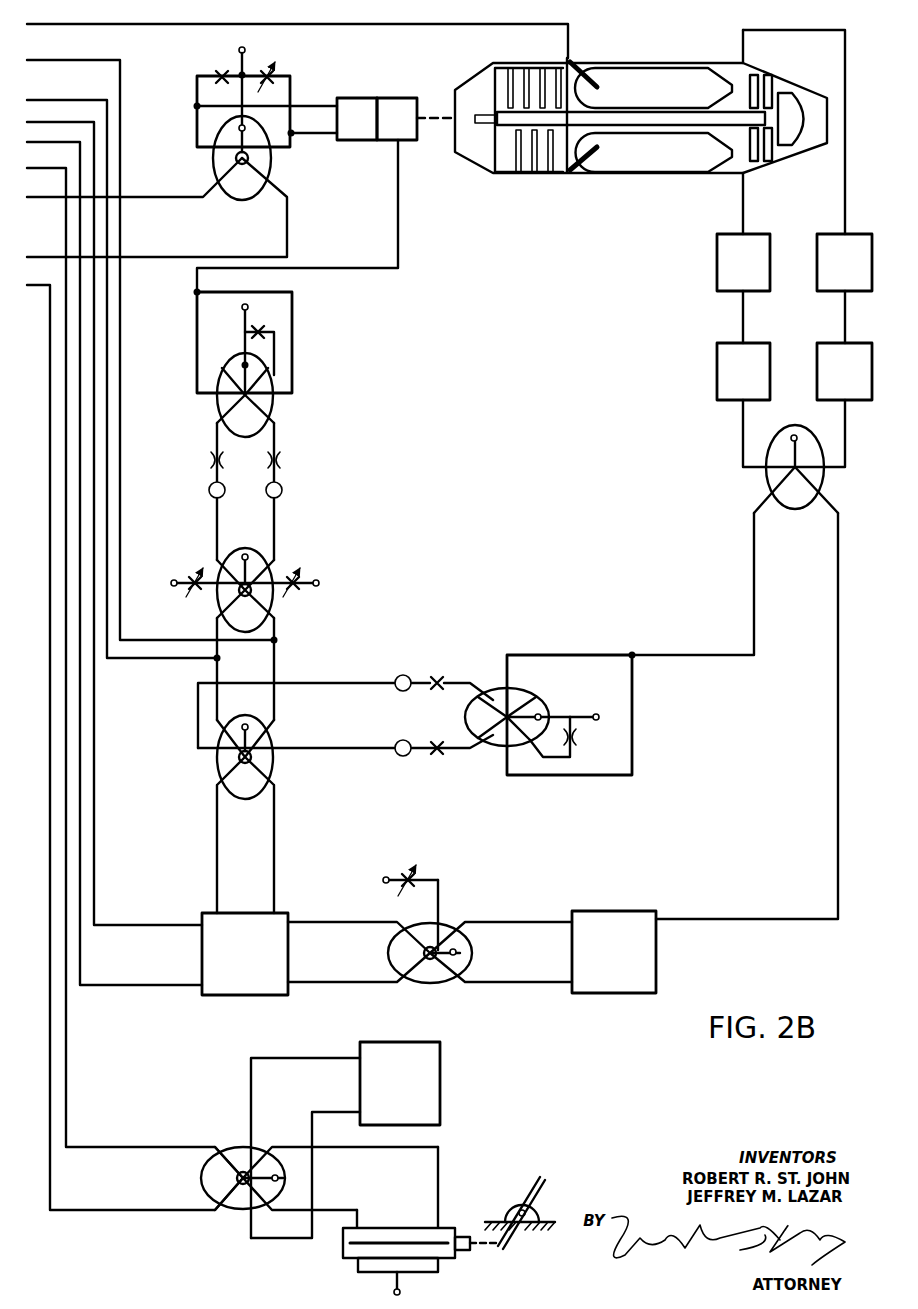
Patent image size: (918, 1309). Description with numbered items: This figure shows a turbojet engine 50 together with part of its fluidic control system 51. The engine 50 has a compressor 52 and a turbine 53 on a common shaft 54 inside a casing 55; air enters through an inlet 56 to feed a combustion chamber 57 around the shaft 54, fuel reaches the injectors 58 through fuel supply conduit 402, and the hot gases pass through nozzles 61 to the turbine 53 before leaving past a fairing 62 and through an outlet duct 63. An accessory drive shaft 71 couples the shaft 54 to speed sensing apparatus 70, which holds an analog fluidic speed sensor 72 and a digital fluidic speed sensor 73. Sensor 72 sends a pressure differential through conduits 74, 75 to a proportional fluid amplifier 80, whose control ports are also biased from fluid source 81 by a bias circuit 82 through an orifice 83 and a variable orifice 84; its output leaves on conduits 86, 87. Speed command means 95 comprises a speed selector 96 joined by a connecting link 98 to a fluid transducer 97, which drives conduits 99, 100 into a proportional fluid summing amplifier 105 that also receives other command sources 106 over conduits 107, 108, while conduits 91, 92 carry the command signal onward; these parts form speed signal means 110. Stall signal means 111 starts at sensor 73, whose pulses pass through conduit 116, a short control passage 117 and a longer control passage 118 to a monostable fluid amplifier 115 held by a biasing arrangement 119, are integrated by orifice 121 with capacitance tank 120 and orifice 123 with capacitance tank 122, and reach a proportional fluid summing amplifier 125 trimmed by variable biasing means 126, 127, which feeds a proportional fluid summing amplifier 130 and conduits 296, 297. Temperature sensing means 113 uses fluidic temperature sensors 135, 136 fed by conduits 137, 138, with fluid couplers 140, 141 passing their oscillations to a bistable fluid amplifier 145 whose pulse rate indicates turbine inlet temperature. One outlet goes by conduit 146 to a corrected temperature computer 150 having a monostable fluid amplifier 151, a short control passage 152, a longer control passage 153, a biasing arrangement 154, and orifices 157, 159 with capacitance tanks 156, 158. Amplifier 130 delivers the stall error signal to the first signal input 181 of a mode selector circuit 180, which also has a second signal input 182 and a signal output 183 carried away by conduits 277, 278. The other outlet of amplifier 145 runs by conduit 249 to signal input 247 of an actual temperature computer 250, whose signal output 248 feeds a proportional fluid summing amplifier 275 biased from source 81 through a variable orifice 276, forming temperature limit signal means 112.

The turbojet engine 50 is at (663, 22).
The fluidic control system 51 is at (555, 1057).
The compressor 52 is at (490, 88).
The turbine 53 is at (770, 100).
The common shaft 54 is at (648, 128).
The casing 55 is at (625, 172).
The inlet 56 is at (462, 97).
The combustion chamber 57 is at (648, 80).
The injectors 58 is at (585, 68).
The nozzles 61 is at (740, 80).
The fairing 62 is at (800, 140).
The outlet duct 63 is at (828, 110).
The speed sensing apparatus 70 is at (373, 75).
The accessory drive shaft 71 is at (432, 122).
The analog fluidic speed sensor 72 is at (347, 128).
The digital fluidic speed sensor 73 is at (387, 128).
The conduit 74 is at (305, 104).
The conduit 75 is at (310, 135).
The proportional fluid amplifier 80 is at (272, 165).
The fluid source 81 is at (244, 48).
The bias circuit 82 is at (232, 105).
The orifice 83 is at (222, 72).
The variable orifice 84 is at (269, 68).
The conduit 86 is at (187, 197).
The conduit 87 is at (198, 257).
The conduit 91 is at (66, 1062).
The conduit 92 is at (50, 895).
The speed command means 95 is at (453, 1135).
The speed selector 96 is at (538, 1202).
The fluid transducer 97 is at (448, 1227).
The connecting link 98 is at (478, 1245).
The conduit 99 is at (438, 1195).
The conduit 100 is at (335, 1218).
The proportional fluid summing amplifier 105 is at (205, 1172).
The other command sources 106 is at (385, 1093).
The conduit 107 is at (300, 1058).
The conduit 108 is at (330, 1110).
The speed signal means 110 is at (188, 1235).
The stall signal means 111 is at (383, 607).
The temperature limit signal means 112 is at (543, 873).
The temperature sensing means 113 is at (683, 312).
The monostable fluid amplifier 115 is at (274, 400).
The conduit 116 is at (398, 235).
The short control passage 117 is at (197, 363).
The longer control passage 118 is at (292, 335).
The biasing arrangement 119 is at (258, 330).
The capacitance tank 120 is at (208, 490).
The orifice 121 is at (207, 462).
The capacitance tank 122 is at (283, 490).
The orifice 123 is at (283, 462).
The proportional fluid summing amplifier 125 is at (275, 608).
The variable biasing means 126 is at (193, 575).
The variable biasing means 127 is at (296, 575).
The proportional fluid summing amplifier 130 is at (217, 772).
The fluidic temperature sensor 135 is at (728, 272).
The fluidic temperature sensor 136 is at (830, 272).
The conduit 137 is at (743, 222).
The conduit 138 is at (845, 200).
The fluid coupler 140 is at (728, 381).
The fluid coupler 141 is at (830, 381).
The bistable fluid amplifier 145 is at (768, 482).
The conduit 146 is at (754, 568).
The corrected temperature computer 150 is at (488, 655).
The monostable fluid amplifier 151 is at (490, 742).
The short control passage 152 is at (562, 655).
The longer control passage 153 is at (632, 725).
The biasing arrangement 154 is at (578, 738).
The capacitance tank 156 is at (395, 678).
The orifice 157 is at (437, 675).
The capacitance tank 158 is at (398, 755).
The orifice 159 is at (437, 758).
The mode selector circuit 180 is at (230, 963).
The first signal input 181 is at (243, 897).
The second signal input 182 is at (313, 953).
The signal output 183 is at (195, 960).
The signal input 247 is at (660, 915).
The signal output 248 is at (548, 960).
The conduit 249 is at (838, 762).
The actual temperature computer 250 is at (598, 961).
The proportional fluid summing amplifier 275 is at (430, 983).
The variable orifice 276 is at (408, 870).
The conduit 277 is at (94, 703).
The conduit 278 is at (80, 815).
The conduit 296 is at (120, 300).
The conduit 297 is at (107, 433).
The fuel supply conduit 402 is at (165, 25).